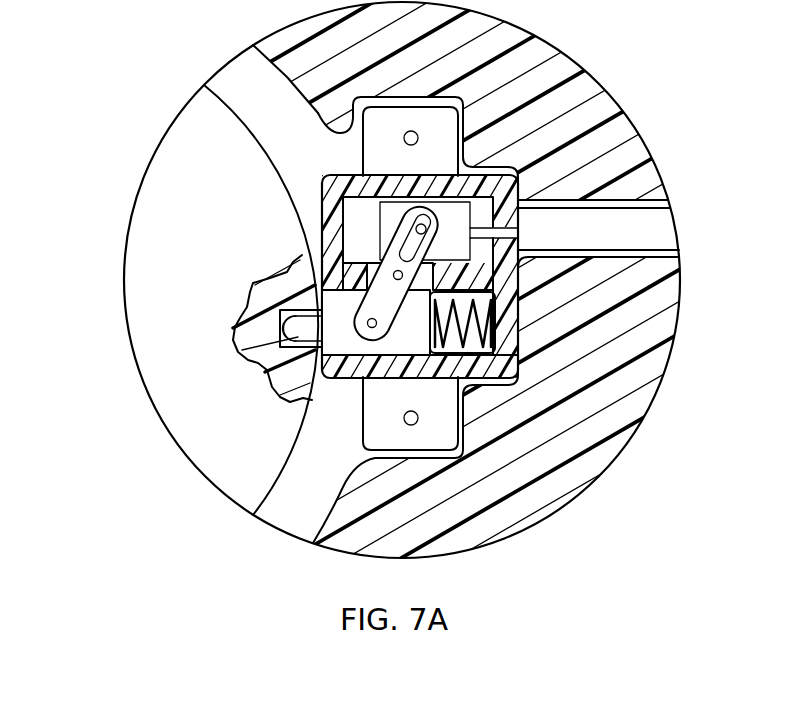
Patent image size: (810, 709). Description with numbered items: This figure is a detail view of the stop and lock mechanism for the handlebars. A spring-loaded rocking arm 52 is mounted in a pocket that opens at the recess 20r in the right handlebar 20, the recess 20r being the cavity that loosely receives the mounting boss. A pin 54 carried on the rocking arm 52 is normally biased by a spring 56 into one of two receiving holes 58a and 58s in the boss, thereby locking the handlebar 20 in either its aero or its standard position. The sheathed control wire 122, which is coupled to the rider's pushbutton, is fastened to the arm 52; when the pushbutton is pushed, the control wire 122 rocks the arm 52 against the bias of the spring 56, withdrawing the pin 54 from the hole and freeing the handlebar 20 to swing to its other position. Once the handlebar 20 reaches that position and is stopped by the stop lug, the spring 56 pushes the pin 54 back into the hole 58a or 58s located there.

The handlebar 20 is at (586, 70).
The recess 20r is at (282, 82).
The spring-loaded rocking arm 52 is at (408, 250).
The pin 54 is at (268, 370).
The spring 56 is at (497, 330).
The receiving hole 58a is at (300, 335).
The receiving hole 58s is at (155, 361).
The sheathed control wire 122 is at (660, 228).